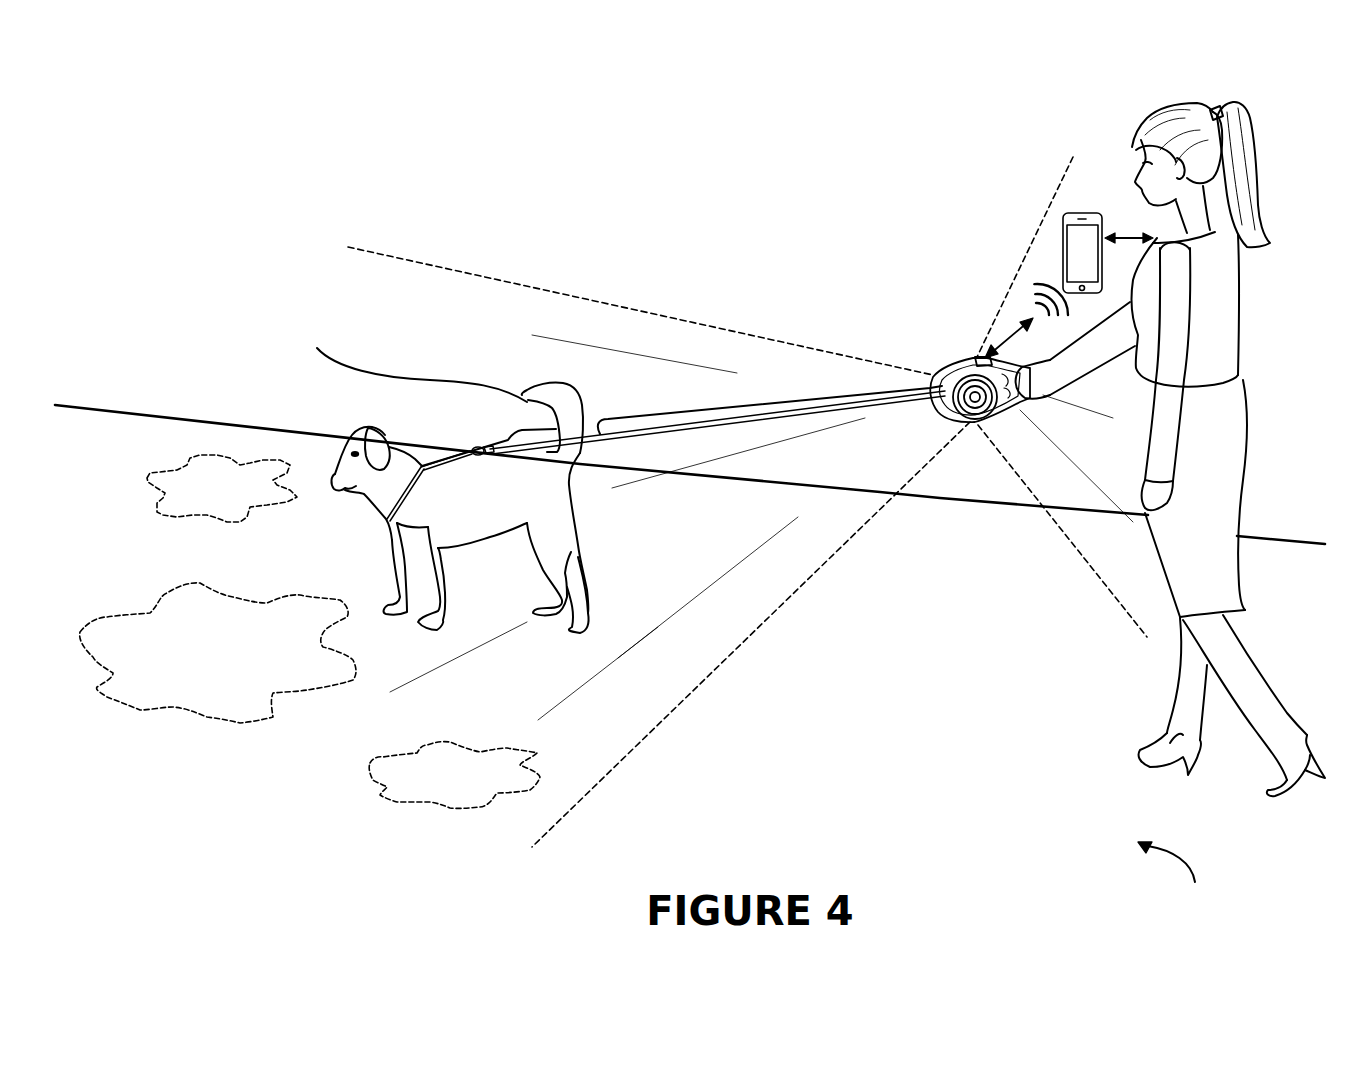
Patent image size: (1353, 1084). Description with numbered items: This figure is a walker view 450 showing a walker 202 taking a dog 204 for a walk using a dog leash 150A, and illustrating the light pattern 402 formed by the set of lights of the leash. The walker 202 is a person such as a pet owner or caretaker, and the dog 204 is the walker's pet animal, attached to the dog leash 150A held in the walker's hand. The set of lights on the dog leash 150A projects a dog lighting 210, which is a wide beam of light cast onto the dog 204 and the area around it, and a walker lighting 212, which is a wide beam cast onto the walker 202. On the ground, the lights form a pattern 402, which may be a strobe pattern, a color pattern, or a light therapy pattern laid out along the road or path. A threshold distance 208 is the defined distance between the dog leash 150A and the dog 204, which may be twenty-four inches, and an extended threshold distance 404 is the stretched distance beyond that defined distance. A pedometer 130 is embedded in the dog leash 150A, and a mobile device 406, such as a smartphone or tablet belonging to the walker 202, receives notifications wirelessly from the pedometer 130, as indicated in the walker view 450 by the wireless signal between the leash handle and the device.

The dog lighting 210 is at (418, 262).
The walker lighting 212 is at (1058, 185).
The threshold distance 208 is at (778, 400).
The extended threshold distance 404 is at (353, 355).
The pattern 402 is at (210, 518).
The dog 204 is at (578, 568).
The dog leash 150A is at (950, 422).
The pedometer 130 is at (977, 357).
The mobile device 406 is at (1063, 242).
The walker 202 is at (1180, 680).
The walker view 450 is at (1184, 883).